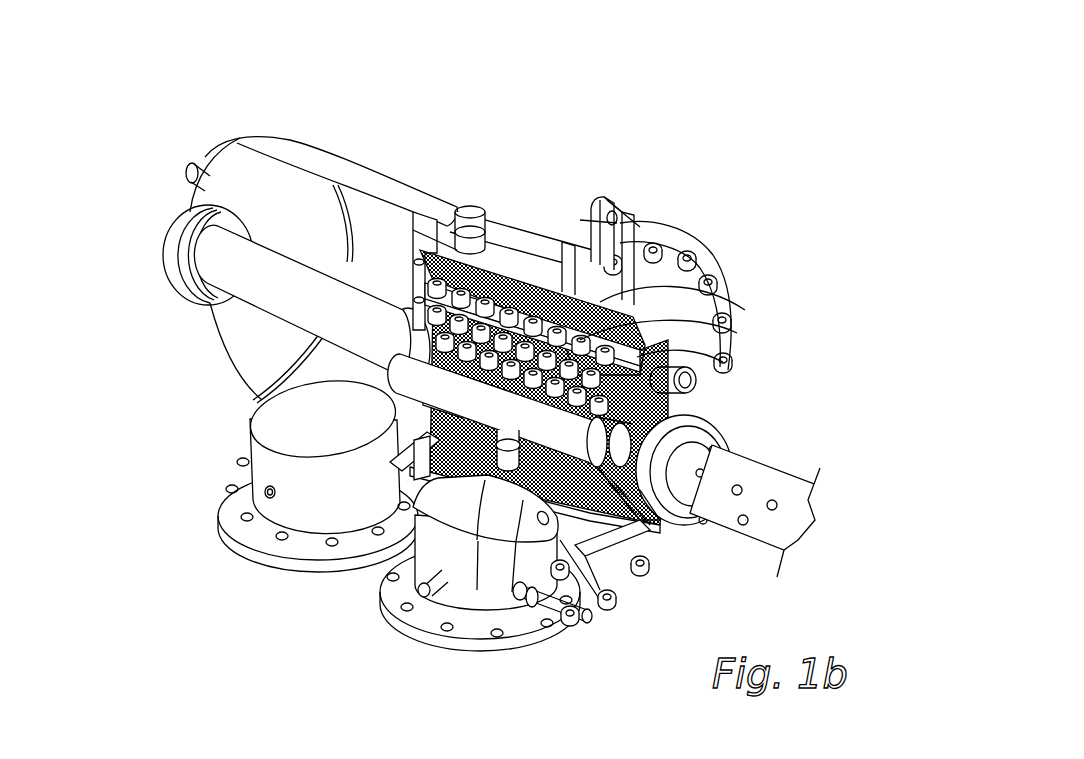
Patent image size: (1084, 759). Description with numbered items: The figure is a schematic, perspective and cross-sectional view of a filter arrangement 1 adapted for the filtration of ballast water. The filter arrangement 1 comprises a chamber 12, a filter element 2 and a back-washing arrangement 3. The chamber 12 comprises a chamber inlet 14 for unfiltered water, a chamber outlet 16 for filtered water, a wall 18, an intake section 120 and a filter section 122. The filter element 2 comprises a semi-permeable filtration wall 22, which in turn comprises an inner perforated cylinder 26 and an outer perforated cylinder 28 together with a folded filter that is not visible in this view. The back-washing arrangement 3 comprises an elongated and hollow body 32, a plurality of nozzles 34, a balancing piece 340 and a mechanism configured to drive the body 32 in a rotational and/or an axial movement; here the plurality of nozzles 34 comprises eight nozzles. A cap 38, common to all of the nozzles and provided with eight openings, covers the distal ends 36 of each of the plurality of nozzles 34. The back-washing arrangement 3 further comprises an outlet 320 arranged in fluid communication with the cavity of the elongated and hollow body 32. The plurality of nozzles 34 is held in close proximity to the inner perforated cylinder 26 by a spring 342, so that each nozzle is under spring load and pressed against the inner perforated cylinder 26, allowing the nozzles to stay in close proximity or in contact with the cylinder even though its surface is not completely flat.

The filter arrangement 1 is at (420, 162).
The filter element 2 is at (598, 592).
The back-washing arrangement 3 is at (397, 372).
The chamber 12 is at (218, 378).
The chamber inlet 14 is at (293, 513).
The chamber outlet 16 is at (460, 600).
The wall 18 is at (440, 243).
The semi-permeable filtration wall 22 is at (700, 272).
The inner perforated cylinder 26 is at (673, 530).
The outer perforated cylinder 28 is at (650, 548).
The elongated and hollow body 32 is at (442, 470).
The plurality of nozzles 34 is at (722, 310).
The distal ends 36 is at (656, 264).
The cap 38 is at (608, 218).
The intake section 120 is at (292, 195).
The filter section 122 is at (560, 243).
The outlet 320 is at (390, 250).
The balancing piece 340 is at (490, 480).
The spring 342 is at (525, 278).